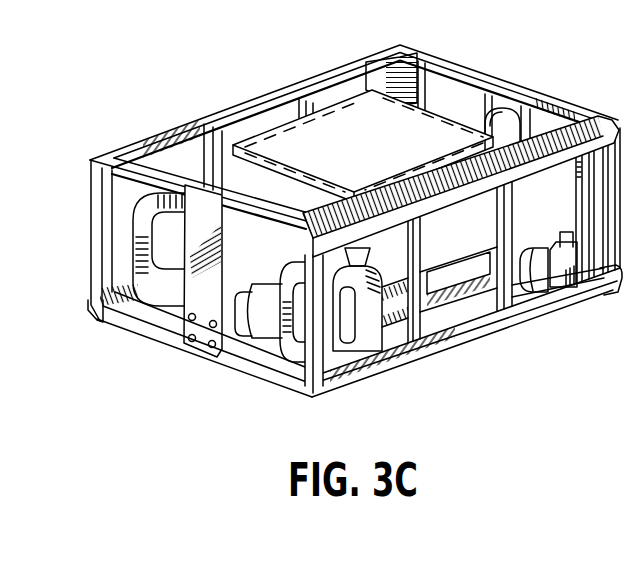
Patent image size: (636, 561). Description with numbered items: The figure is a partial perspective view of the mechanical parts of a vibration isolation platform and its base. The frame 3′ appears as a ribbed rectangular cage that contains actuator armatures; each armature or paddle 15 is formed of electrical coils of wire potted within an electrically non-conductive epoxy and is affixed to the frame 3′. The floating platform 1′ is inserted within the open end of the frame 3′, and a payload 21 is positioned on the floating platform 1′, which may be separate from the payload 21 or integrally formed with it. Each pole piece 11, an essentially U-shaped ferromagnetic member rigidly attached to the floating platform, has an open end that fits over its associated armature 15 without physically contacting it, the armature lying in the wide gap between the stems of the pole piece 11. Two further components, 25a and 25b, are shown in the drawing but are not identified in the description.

The floating platform 1′ is at (458, 317).
The frame 3′ is at (248, 100).
The pole piece 11 is at (106, 212).
The armature 15 is at (170, 272).
The payload 21 is at (380, 148).
The drive unit 25a is at (520, 254).
The control unit 25b is at (547, 292).